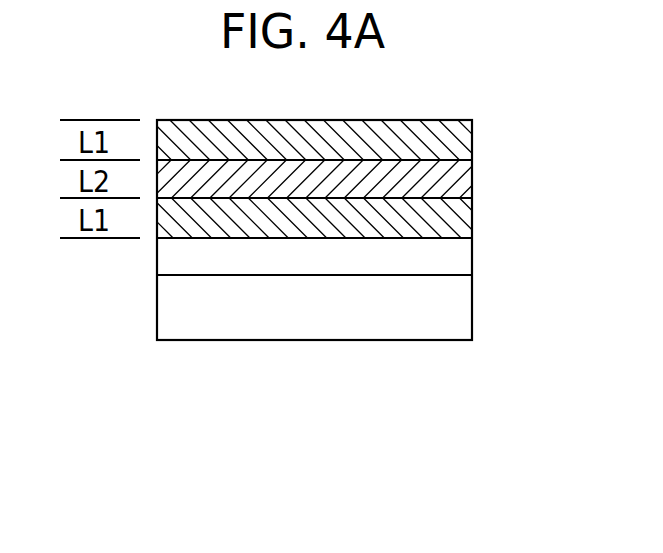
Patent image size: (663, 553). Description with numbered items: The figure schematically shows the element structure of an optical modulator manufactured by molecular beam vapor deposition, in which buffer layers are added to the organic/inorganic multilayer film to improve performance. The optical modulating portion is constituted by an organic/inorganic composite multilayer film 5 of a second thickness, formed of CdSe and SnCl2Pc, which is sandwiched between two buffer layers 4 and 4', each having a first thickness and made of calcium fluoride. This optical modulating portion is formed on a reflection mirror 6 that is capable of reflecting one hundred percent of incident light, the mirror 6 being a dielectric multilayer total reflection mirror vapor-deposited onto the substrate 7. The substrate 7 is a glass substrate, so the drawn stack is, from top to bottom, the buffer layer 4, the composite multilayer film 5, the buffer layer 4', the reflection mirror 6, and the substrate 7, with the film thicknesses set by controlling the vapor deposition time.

The buffer layer 4 is at (343, 140).
The organic/inorganic composite multilayer film 5 is at (472, 178).
The buffer layer 4' is at (347, 218).
The reflection mirror 6 is at (472, 257).
The substrate 7 is at (472, 307).